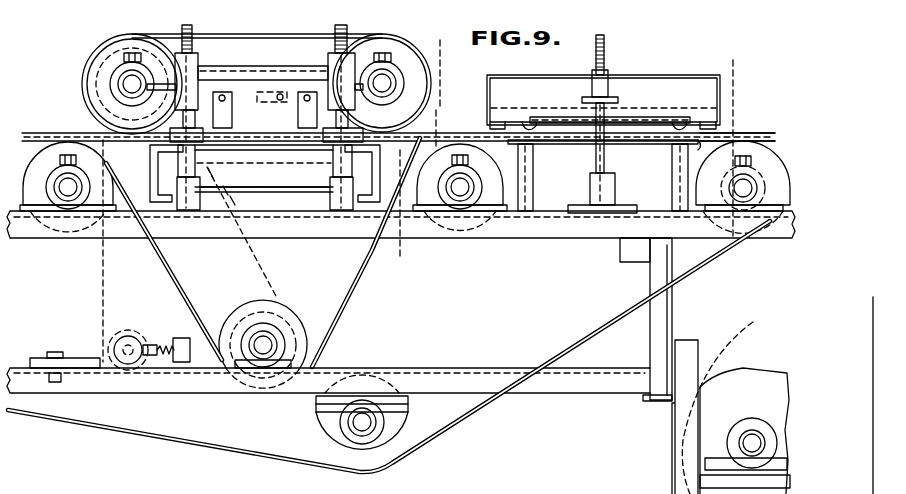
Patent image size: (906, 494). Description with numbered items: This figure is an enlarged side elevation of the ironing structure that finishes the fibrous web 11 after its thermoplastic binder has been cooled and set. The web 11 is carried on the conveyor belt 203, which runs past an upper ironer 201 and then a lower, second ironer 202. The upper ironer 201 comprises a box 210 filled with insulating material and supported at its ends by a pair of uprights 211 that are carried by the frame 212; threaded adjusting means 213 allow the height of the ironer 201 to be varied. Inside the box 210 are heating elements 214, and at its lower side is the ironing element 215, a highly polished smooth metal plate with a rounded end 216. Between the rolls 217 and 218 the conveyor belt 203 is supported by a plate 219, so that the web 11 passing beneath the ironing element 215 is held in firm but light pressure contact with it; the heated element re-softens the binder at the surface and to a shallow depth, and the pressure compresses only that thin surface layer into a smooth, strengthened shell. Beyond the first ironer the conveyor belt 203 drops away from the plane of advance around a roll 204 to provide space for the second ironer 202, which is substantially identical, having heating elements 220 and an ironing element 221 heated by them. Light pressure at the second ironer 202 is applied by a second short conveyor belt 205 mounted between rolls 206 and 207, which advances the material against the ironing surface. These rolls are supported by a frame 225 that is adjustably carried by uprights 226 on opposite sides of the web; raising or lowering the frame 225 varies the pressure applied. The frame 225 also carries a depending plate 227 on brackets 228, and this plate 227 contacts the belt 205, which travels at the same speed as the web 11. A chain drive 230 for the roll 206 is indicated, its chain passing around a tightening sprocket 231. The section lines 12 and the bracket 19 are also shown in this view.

The fibrous web 11 is at (448, 137).
The section line XII 12 is at (447, 36).
The support bracket 19 is at (752, 380).
The upper ironer 201 is at (658, 75).
The second ironer 202 is at (265, 206).
The conveyor belt 203 is at (604, 332).
The roll 204 is at (296, 331).
The second short conveyor belt 205 is at (258, 37).
The roll 206 is at (86, 86).
The roll 207 is at (430, 83).
The box 210 is at (567, 75).
The uprights 211 is at (606, 53).
The frame 212 is at (561, 240).
The threaded adjusting means 213 is at (613, 101).
The heating elements 214 is at (660, 117).
The ironing element 215 is at (637, 136).
The rounded end 216 is at (725, 131).
The roll 217 is at (464, 240).
The roll 218 is at (763, 222).
The plate 219 is at (590, 150).
The heating elements 220 is at (243, 150).
The ironing element 221 is at (295, 167).
The frame 225 is at (238, 69).
The uprights 226 is at (194, 39).
The depending plate 227 is at (258, 132).
The brackets 228 is at (231, 131).
The chain drive 230 is at (100, 283).
The tightening sprocket 231 is at (136, 341).